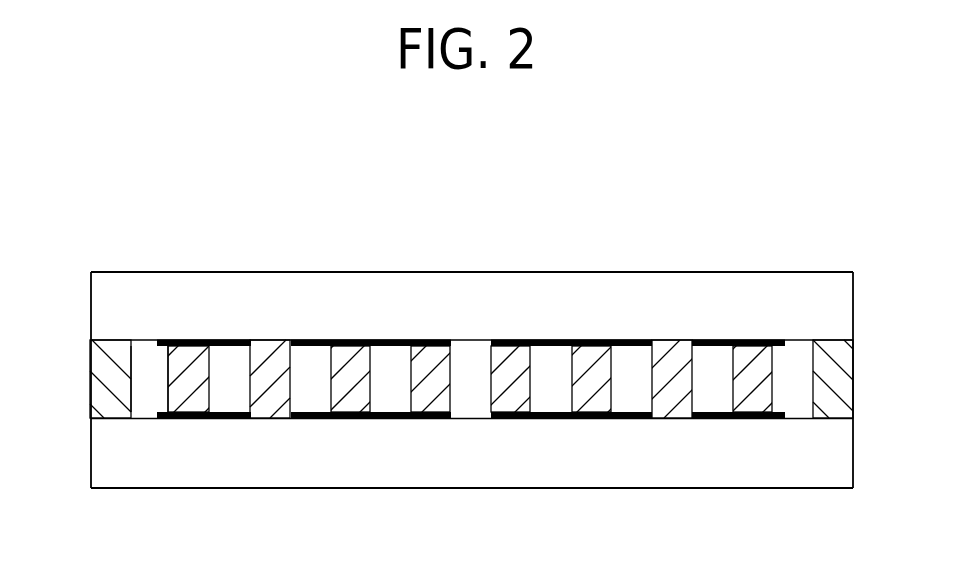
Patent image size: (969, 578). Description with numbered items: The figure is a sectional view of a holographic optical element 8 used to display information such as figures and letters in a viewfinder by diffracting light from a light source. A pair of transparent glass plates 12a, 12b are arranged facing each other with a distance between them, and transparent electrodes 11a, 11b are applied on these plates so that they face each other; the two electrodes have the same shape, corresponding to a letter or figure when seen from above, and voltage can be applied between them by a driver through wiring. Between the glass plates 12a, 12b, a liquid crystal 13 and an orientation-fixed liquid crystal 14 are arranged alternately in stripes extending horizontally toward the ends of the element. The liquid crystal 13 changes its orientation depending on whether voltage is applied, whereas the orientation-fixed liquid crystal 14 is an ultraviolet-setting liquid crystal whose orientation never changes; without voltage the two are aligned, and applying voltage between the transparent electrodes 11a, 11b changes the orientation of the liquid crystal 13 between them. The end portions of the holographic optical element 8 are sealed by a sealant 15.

The holographic optical element 8 is at (718, 245).
The transparent electrode 11a is at (228, 338).
The transparent electrode 11b is at (235, 420).
The transparent glass plate 12a is at (383, 305).
The transparent glass plate 12b is at (375, 457).
The liquid crystal 13 is at (145, 405).
The orientation-fixed liquid crystal 14 is at (190, 400).
The sealant 15 is at (98, 388).